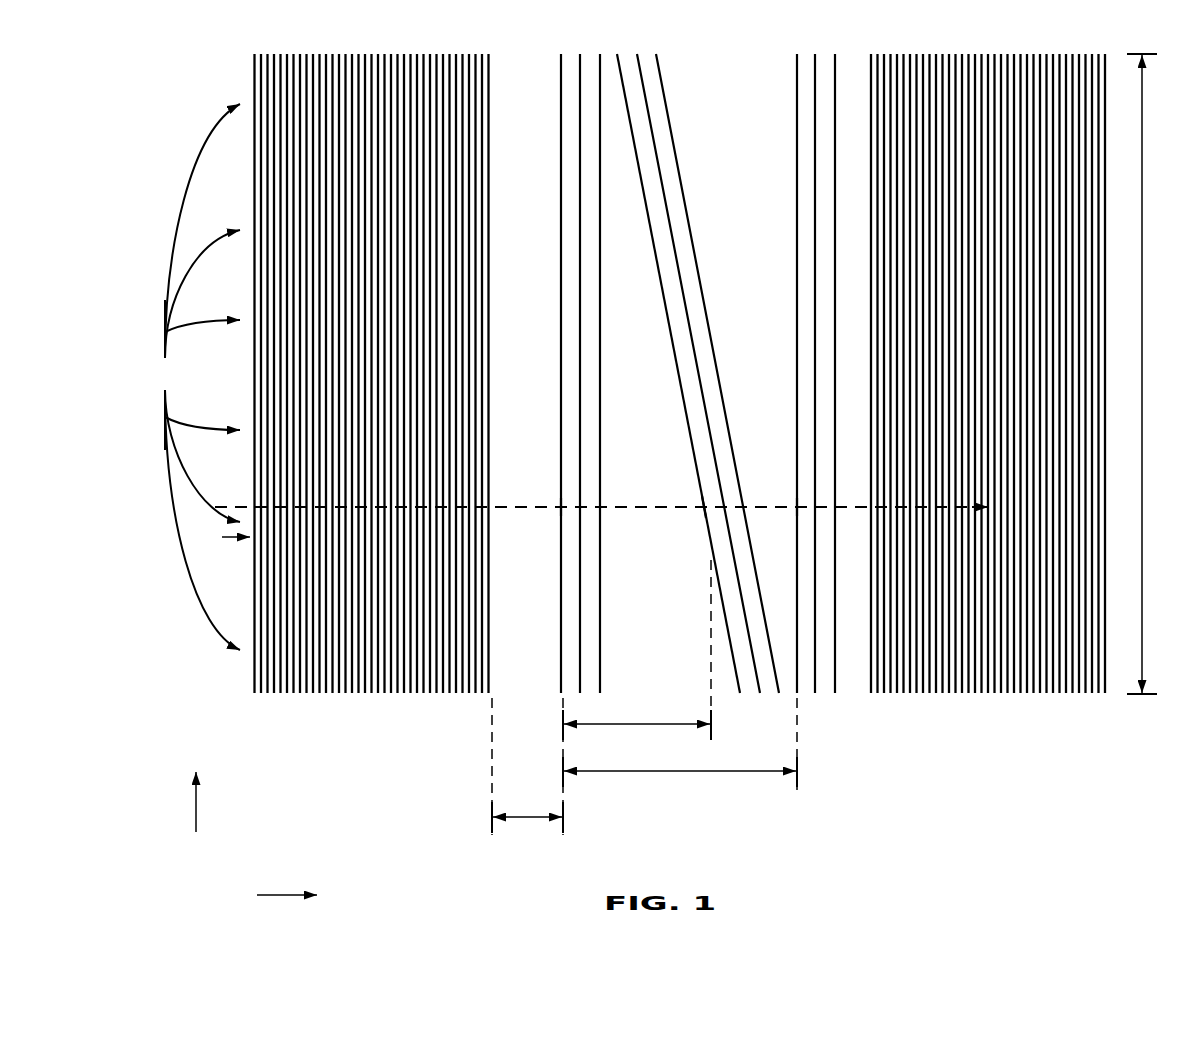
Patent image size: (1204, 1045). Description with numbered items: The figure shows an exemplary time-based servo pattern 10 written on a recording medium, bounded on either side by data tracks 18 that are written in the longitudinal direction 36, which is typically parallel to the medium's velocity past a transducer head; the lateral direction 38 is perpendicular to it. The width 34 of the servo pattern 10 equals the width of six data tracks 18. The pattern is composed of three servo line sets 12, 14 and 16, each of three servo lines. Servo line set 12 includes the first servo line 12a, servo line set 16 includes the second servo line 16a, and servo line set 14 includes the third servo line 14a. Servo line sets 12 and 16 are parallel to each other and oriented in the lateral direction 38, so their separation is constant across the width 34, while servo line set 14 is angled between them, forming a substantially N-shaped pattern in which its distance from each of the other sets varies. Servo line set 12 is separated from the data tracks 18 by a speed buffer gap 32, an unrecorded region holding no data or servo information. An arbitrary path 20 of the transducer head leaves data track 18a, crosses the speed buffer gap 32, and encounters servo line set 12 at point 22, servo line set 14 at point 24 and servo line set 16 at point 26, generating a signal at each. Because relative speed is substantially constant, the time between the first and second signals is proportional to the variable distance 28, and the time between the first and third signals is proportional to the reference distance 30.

The time-based servo pattern 10 is at (852, 727).
The servo line set 12 is at (607, 355).
The first servo line 12a is at (559, 273).
The servo line set 14 is at (723, 353).
The third servo line 14a is at (657, 273).
The servo line set 16 is at (790, 328).
The second servo line 16a is at (795, 273).
The data tracks 18 is at (195, 377).
The data track 18a is at (217, 537).
The path of a transducer head 20 is at (621, 502).
The point 22 is at (551, 502).
The point 24 is at (694, 510).
The point 26 is at (784, 502).
The variable distance 28 is at (668, 722).
The reference distance 30 is at (752, 770).
The speed buffer gap 32 is at (526, 820).
The width 34 is at (1145, 616).
The longitudinal direction 36 is at (272, 895).
The lateral direction 38 is at (196, 816).